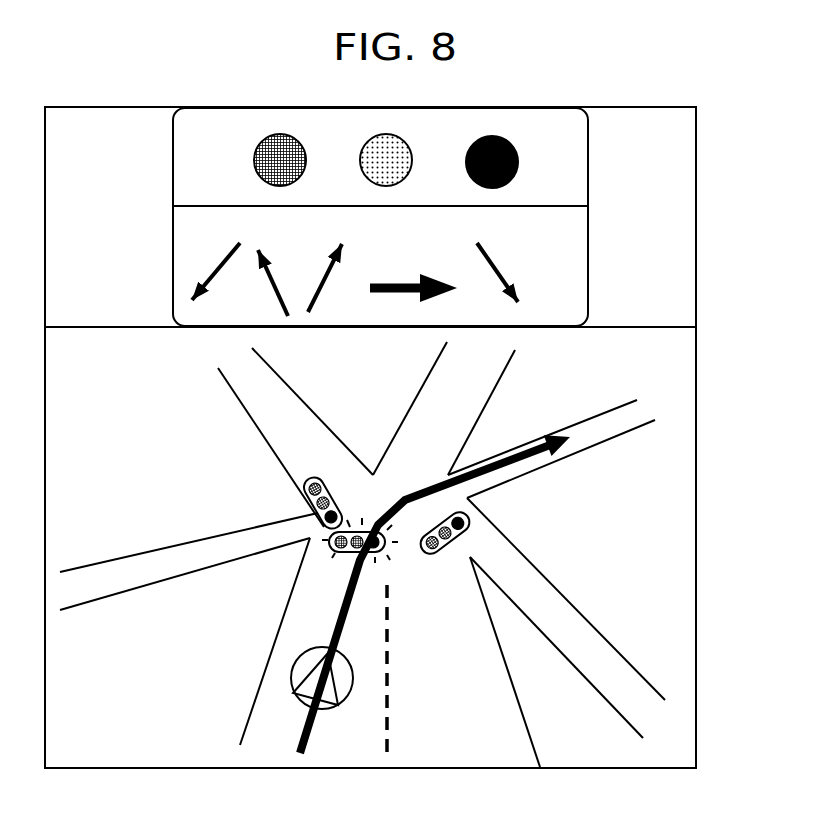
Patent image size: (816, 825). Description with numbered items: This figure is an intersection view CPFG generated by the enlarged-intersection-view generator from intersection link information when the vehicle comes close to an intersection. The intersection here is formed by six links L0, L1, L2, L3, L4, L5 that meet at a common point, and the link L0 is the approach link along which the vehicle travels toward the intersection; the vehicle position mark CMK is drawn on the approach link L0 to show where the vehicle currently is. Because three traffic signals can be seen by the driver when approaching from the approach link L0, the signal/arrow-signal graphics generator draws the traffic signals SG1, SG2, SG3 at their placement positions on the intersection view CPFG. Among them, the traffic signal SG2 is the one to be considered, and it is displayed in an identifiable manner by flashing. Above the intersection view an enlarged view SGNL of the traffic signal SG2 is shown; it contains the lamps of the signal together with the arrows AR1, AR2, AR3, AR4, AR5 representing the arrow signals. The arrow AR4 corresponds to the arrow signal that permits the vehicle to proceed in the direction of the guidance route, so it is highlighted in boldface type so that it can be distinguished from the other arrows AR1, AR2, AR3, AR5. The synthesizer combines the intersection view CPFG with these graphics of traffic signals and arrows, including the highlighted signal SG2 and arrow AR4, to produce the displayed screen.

The enlarged view of the traffic signal SGNL is at (590, 150).
The arrow AR1 is at (227, 257).
The arrow AR2 is at (273, 275).
The arrow AR3 is at (333, 277).
The arrow AR4 is at (387, 282).
The arrow AR5 is at (490, 257).
The link L0 is at (297, 642).
The link L1 is at (153, 553).
The link L2 is at (297, 408).
The link L3 is at (487, 387).
The link L4 is at (597, 438).
The link L5 is at (581, 672).
The traffic signal SG1 is at (315, 478).
The traffic signal SG2 is at (385, 553).
The traffic signal SG3 is at (462, 540).
The vehicle position mark CMK is at (327, 710).
The intersection view CPFG is at (684, 528).